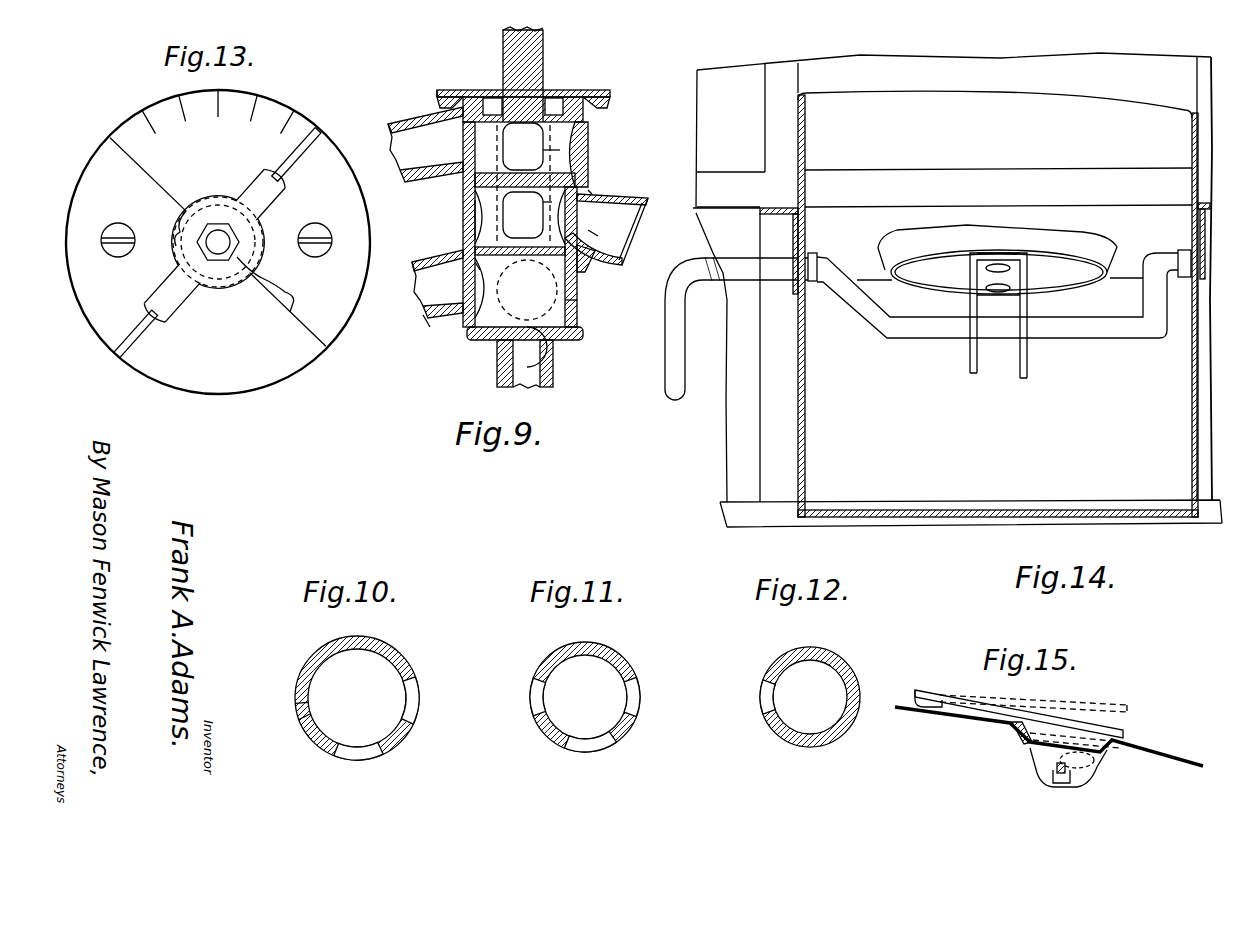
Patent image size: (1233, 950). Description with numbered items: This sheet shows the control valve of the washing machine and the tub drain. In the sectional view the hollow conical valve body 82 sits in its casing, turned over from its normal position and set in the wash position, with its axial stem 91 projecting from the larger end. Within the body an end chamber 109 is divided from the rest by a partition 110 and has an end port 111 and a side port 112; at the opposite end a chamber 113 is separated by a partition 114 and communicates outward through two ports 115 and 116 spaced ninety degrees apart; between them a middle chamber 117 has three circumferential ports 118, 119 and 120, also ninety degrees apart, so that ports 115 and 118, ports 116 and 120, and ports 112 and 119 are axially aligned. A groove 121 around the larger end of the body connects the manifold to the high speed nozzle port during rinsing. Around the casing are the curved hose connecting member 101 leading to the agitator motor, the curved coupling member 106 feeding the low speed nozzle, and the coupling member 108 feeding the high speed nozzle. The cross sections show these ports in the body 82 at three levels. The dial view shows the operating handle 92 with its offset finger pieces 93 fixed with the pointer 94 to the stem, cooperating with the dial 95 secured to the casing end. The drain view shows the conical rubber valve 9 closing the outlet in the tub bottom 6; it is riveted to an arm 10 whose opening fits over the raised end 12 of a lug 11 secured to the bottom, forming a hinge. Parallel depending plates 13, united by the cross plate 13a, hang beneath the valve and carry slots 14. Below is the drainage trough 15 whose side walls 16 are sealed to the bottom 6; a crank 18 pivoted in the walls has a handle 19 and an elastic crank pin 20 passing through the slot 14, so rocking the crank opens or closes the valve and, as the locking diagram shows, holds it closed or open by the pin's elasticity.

In FIG. 15, the bottom 6 is at (1153, 753).
In FIG. 14, the valve 9 is at (1068, 265).
In FIG. 15, the valve 9 is at (1070, 737).
In FIG. 9, the arm 10 is at (618, 147).
In FIG. 15, the arm 10 is at (1058, 767).
In FIG. 9, the lug 11 is at (609, 217).
In FIG. 9, the end of lug 12 is at (606, 288).
In FIG. 14, the depending plates 13 is at (1020, 367).
In FIG. 14, the cross plate 13a is at (1013, 260).
In FIG. 15, the slots 14 is at (1072, 787).
In FIG. 14, the discharge or drainage trough 15 is at (917, 507).
In FIG. 14, the side walls of trough 16 is at (798, 441).
In FIG. 14, the crank 18 is at (1157, 257).
In FIG. 14, the handle 19 is at (685, 354).
In FIG. 14, the crank pin 20 is at (1077, 340).
In FIG. 9, the valve body 82 is at (533, 100).
In FIG. 10, the valve body 82 is at (397, 660).
In FIG. 11, the valve body 82 is at (555, 652).
In FIG. 12, the valve body 82 is at (827, 650).
In FIG. 9, the stem 91 is at (543, 56).
In FIG. 13, the operating handle 92 is at (290, 202).
In FIG. 13, the finger pieces 93 is at (305, 131).
In FIG. 13, the pointer 94 is at (290, 296).
In FIG. 13, the dial 95 is at (270, 371).
In FIG. 9, the curved hose connecting member 101 is at (630, 191).
In FIG. 9, the curved coupling member 106 is at (433, 323).
In FIG. 9, the coupling member 108 is at (419, 119).
In FIG. 9, the end chamber 109 is at (577, 307).
In FIG. 9, the partition 110 is at (520, 283).
In FIG. 9, the end port 111 is at (552, 369).
In FIG. 9, the side port 112 is at (465, 297).
In FIG. 12, the side port 112 is at (770, 703).
In FIG. 9, the chamber 113 is at (557, 133).
In FIG. 9, the partition 114 is at (588, 168).
In FIG. 9, the port 115 is at (540, 145).
In FIG. 10, the port 115 is at (363, 760).
In FIG. 9, the port 116 is at (583, 157).
In FIG. 10, the port 116 is at (413, 700).
In FIG. 9, the middle chamber 117 is at (556, 203).
In FIG. 9, the port 118 is at (523, 215).
In FIG. 11, the port 118 is at (590, 750).
In FIG. 9, the port 119 is at (480, 229).
In FIG. 11, the port 119 is at (540, 708).
In FIG. 9, the port 120 is at (570, 231).
In FIG. 11, the port 120 is at (637, 696).
In FIG. 10, the groove 121 is at (317, 657).